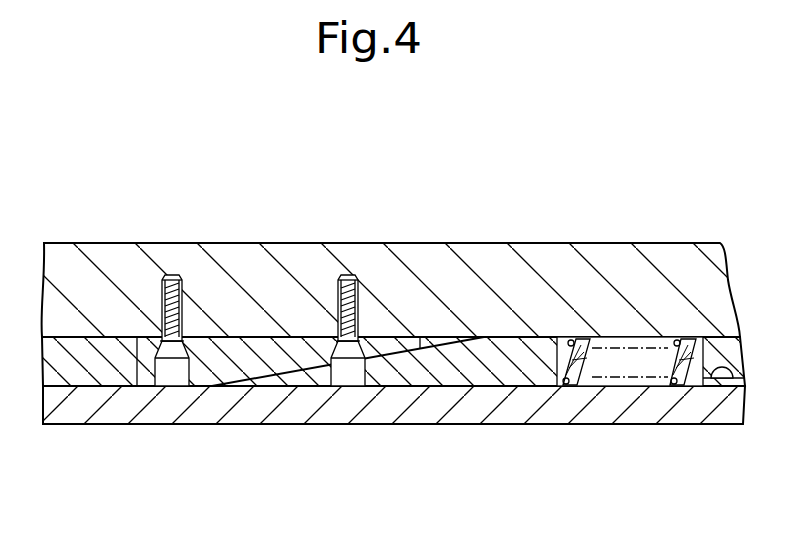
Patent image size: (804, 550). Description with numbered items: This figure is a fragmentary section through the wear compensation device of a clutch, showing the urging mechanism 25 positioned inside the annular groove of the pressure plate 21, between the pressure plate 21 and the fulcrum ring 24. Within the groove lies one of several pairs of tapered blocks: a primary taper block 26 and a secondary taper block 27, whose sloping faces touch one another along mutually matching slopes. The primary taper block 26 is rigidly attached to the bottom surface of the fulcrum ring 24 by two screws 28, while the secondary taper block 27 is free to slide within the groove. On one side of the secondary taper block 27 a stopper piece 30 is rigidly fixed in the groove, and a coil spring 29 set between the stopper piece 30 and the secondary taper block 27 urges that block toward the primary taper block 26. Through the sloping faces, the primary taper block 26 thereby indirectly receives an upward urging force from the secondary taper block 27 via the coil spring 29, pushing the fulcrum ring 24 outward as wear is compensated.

The pressure plate 21 is at (258, 408).
The fulcrum ring 24 is at (300, 267).
The urging mechanism 25 is at (441, 322).
The primary taper block 26 is at (273, 357).
The secondary taper block 27 is at (440, 373).
The screws 28 is at (190, 297).
The coil spring 29 is at (577, 363).
The stopper piece 30 is at (710, 378).